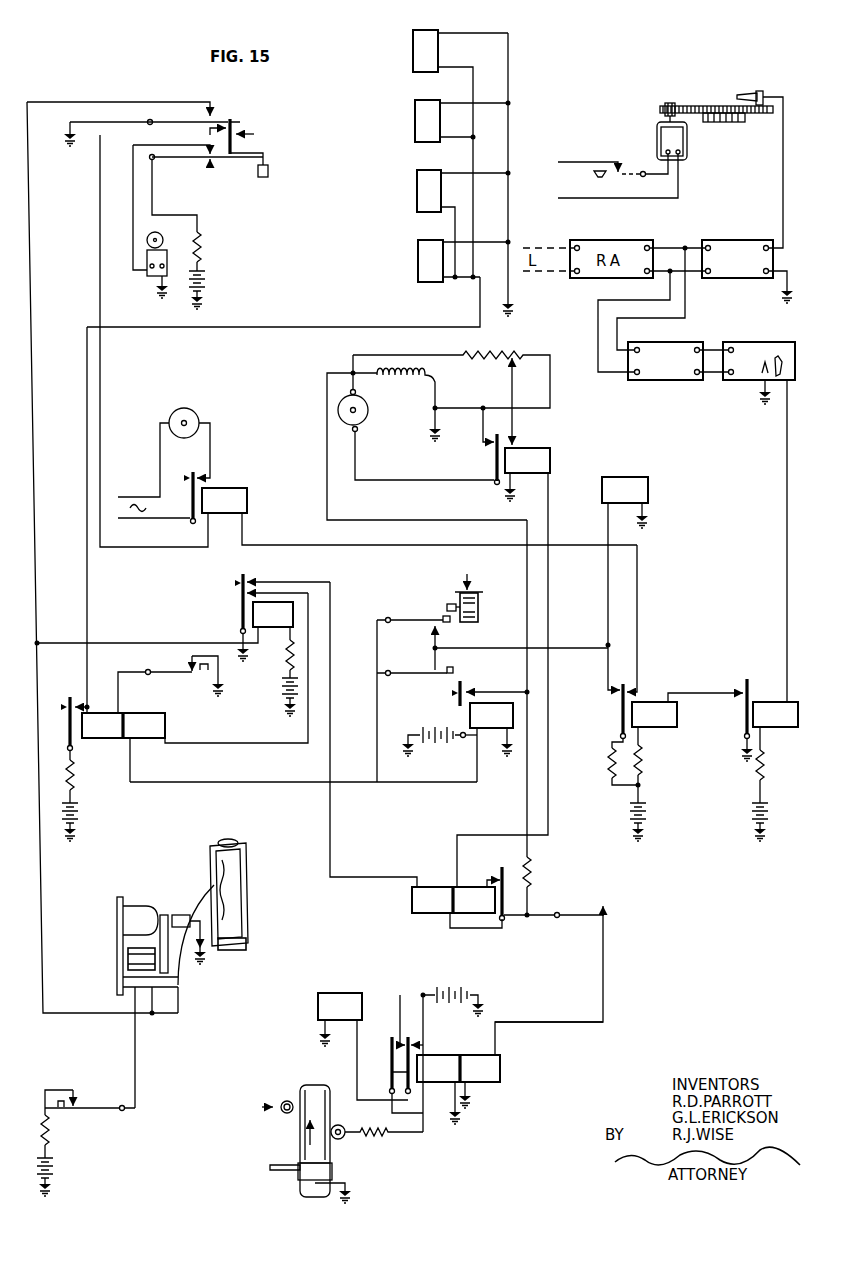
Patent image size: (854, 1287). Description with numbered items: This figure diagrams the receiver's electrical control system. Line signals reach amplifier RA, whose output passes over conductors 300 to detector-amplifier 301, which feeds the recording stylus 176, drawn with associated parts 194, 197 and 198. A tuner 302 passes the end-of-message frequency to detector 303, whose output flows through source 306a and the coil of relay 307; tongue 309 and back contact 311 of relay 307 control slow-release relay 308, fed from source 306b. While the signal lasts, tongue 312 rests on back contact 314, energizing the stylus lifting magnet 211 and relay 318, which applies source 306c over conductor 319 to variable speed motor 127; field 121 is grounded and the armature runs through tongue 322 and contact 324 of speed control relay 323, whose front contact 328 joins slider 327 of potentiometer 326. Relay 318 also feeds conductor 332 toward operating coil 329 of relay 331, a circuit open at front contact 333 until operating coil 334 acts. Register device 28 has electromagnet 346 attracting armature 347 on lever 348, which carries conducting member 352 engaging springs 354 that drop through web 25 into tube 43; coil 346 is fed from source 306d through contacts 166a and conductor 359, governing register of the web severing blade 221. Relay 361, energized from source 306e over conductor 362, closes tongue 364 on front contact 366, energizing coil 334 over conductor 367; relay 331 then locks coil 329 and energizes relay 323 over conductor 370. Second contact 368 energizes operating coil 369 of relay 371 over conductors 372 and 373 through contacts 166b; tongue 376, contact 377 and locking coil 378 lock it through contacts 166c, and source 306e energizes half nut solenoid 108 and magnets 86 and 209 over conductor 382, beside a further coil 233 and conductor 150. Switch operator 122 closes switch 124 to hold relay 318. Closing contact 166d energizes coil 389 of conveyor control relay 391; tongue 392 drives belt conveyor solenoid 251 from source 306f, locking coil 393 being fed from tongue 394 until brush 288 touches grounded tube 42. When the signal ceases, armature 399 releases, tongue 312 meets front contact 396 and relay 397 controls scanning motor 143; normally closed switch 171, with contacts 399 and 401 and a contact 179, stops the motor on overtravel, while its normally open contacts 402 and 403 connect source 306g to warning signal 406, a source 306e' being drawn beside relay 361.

The armature / contact 399 is at (208, 112).
The contact 401 is at (216, 127).
The normally closed switch 171 is at (290, 143).
The normally open contact 402 is at (209, 163).
The contact 179 is at (268, 177).
The normally open contact 403 is at (225, 162).
The warning signal 406 is at (150, 270).
The current source 306g is at (206, 279).
The magnet 209 is at (412, 55).
The relay coil 233 is at (414, 122).
The magnet 86 is at (416, 192).
The half nut operating solenoid 108 is at (417, 262).
The conductor 150 is at (478, 287).
The recording stylus 176 is at (739, 96).
The pinion 197 is at (664, 109).
The motor 198 is at (656, 141).
The rack 194 is at (700, 118).
The conductors 300 is at (661, 262).
The detector-amplifier 301 is at (722, 243).
The tuner 302 is at (655, 380).
The detector device 303 is at (738, 346).
The potentiometer 326 is at (490, 353).
The adjustable slider 327 is at (510, 366).
The motor field / projection 121 is at (392, 378).
The variable speed motor 127 is at (364, 422).
The front contact 328 is at (514, 436).
The contact 324 is at (493, 449).
The speed control relay 323 is at (552, 458).
The tongue 322 is at (495, 485).
The scanning motor 143 is at (188, 412).
The relay 397 is at (228, 490).
The stylus lifting magnet 211 is at (622, 477).
The conductor 370 is at (549, 520).
The conductor 382 is at (85, 431).
The front contact 366 is at (253, 579).
The second contact 368 is at (262, 583).
The conductor 367 is at (333, 607).
The grounded tongue 364 is at (243, 612).
The relay 361 is at (272, 636).
The battery 306e' is at (263, 695).
The switch 124 is at (432, 628).
The switch operator 122 is at (448, 623).
The normally closed contacts 166b is at (433, 672).
The conductor 319 is at (525, 686).
The relay 318 is at (490, 732).
The current source 306c is at (445, 750).
The front contact 396 is at (634, 688).
The back contact 311 is at (746, 684).
The back contact 314 is at (618, 692).
The tongue 312 is at (621, 718).
The relay 308 is at (645, 728).
The tongue 309 is at (746, 712).
The relay 307 is at (762, 728).
The current source 306b is at (650, 812).
The supply source 306a is at (768, 812).
The contact 377 is at (84, 702).
The tongue 376 is at (68, 700).
The contacts 166c is at (186, 668).
The relay 371 is at (172, 697).
The operating coil 369 is at (166, 722).
The locking coil 378 is at (120, 740).
The conductor 372 is at (210, 744).
The conductor 373 is at (270, 784).
The current source 306e is at (95, 795).
The conductor 332 is at (526, 812).
The operating (locking) coil 329 is at (465, 887).
The front contact 333 is at (486, 880).
The operating coil 334 is at (412, 900).
The relay 331 is at (448, 923).
The normally open contact 166d is at (601, 907).
The conductor 362 is at (42, 893).
The conducting springs 354 is at (200, 882).
The lever 348 is at (165, 915).
The web 25 is at (248, 890).
The tube 43 is at (248, 943).
The electromagnet 346 is at (128, 958).
The control device 28 is at (98, 988).
The conducting member 352 is at (188, 930).
The armature 347 is at (175, 972).
The conductor 359 is at (180, 1007).
The belt conveyor solenoid 251 is at (330, 993).
The current source 306f is at (448, 985).
The relay tongue 394 is at (396, 1046).
The locking coil 393 is at (436, 1056).
The coil 389 is at (500, 1072).
The tongue 392 is at (391, 1071).
The conveyor control relay 391 is at (515, 1101).
The grounded tube 42 is at (310, 1088).
The brush 288 is at (341, 1140).
The web severing blade 221 is at (272, 1172).
The normally closed contacts 166a is at (75, 1104).
The current source 306d is at (56, 1172).